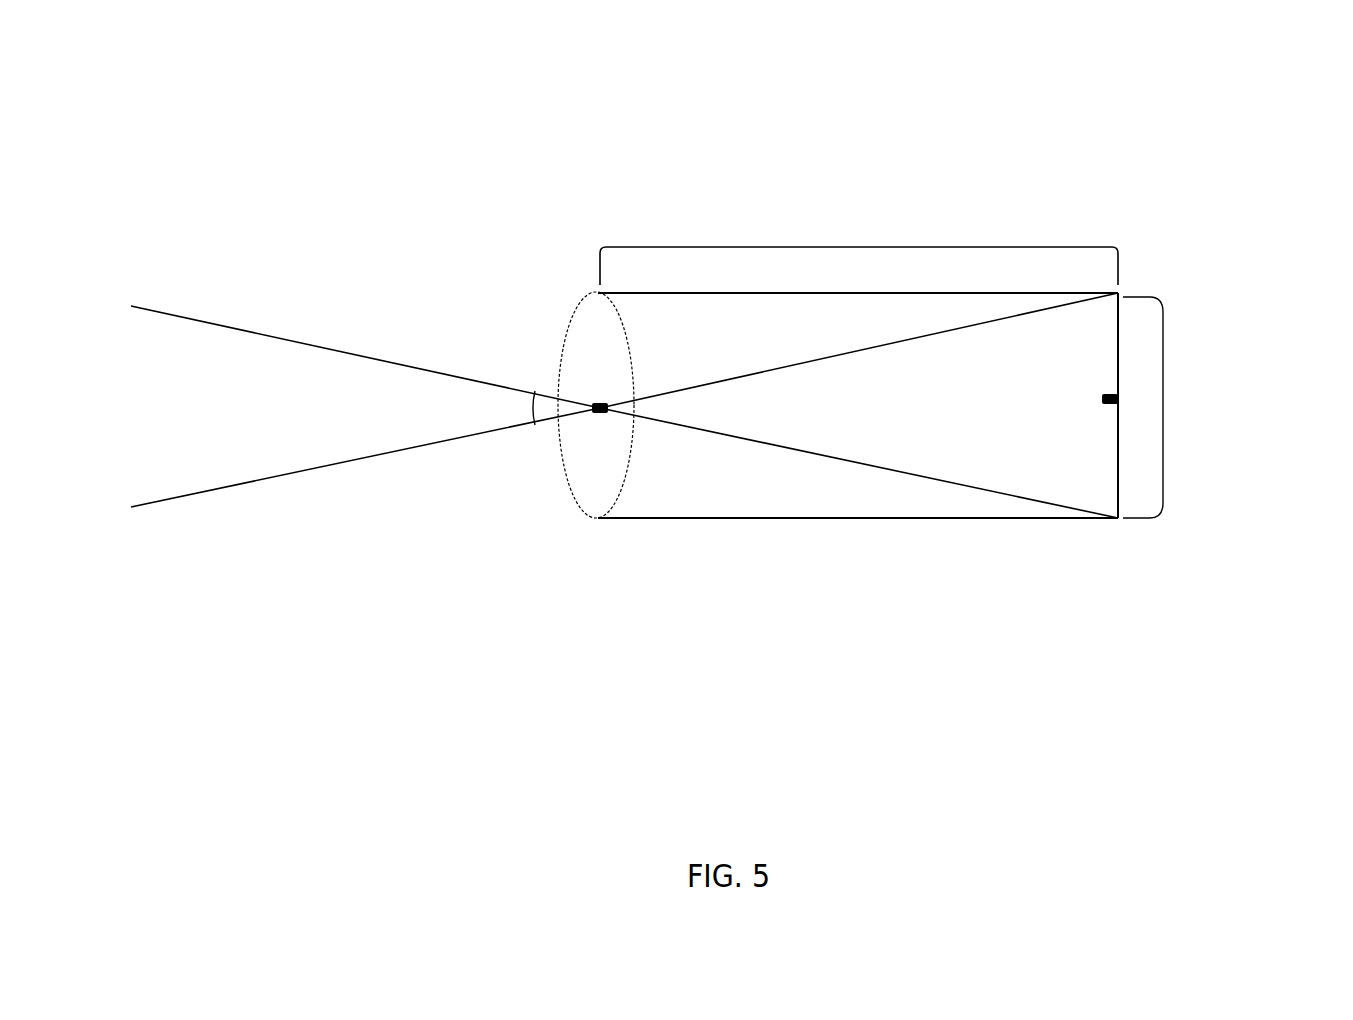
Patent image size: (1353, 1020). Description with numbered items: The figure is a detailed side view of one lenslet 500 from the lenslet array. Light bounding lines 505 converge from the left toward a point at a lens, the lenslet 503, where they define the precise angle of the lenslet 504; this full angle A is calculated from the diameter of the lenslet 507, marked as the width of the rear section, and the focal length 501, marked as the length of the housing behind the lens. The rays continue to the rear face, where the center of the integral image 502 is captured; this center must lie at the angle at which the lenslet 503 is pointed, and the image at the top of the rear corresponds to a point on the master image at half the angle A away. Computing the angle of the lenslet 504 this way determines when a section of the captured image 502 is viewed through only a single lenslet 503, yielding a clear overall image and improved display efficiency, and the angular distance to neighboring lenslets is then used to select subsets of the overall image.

The lenslet 500 is at (450, 111).
The focal length 501 is at (843, 247).
The integral image 502 is at (1118, 399).
The lenslet 503 is at (596, 557).
The angle of the lenslet 504 is at (492, 405).
The light rays / field of view boundaries 505 is at (243, 320).
The diameter of the lenslet 507 is at (1163, 330).